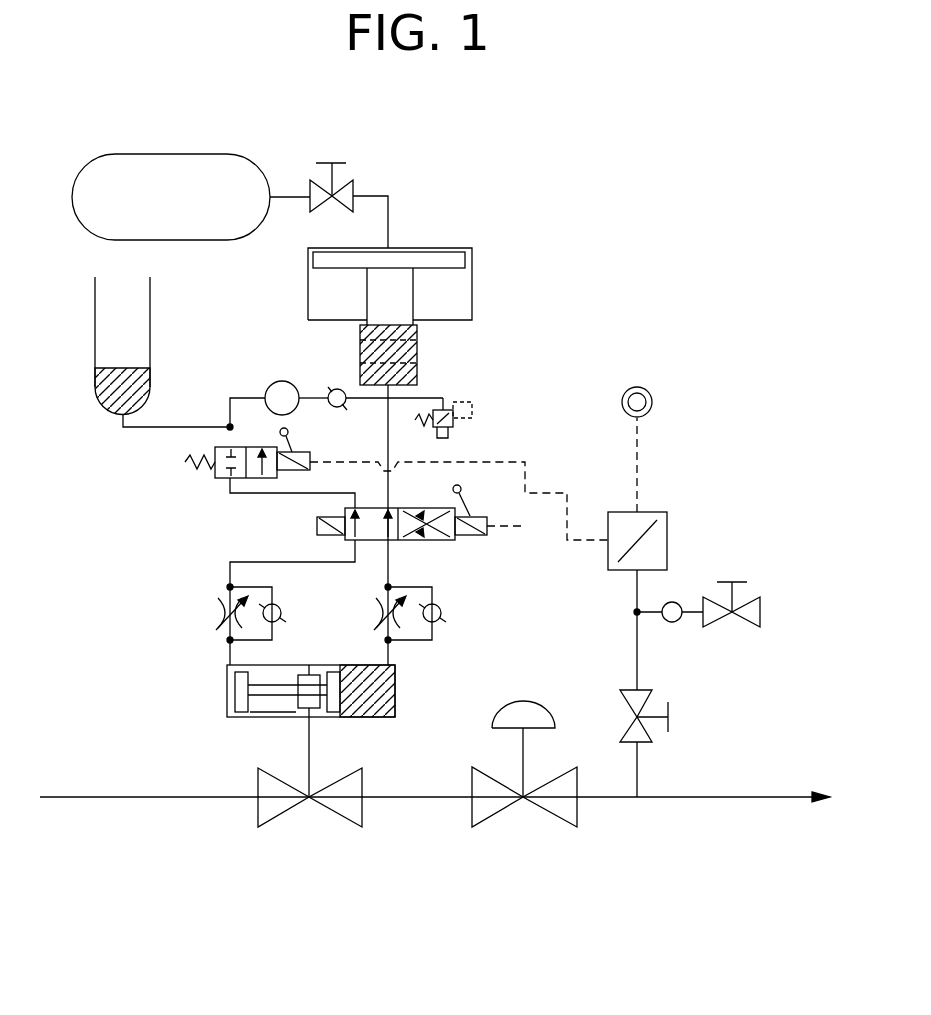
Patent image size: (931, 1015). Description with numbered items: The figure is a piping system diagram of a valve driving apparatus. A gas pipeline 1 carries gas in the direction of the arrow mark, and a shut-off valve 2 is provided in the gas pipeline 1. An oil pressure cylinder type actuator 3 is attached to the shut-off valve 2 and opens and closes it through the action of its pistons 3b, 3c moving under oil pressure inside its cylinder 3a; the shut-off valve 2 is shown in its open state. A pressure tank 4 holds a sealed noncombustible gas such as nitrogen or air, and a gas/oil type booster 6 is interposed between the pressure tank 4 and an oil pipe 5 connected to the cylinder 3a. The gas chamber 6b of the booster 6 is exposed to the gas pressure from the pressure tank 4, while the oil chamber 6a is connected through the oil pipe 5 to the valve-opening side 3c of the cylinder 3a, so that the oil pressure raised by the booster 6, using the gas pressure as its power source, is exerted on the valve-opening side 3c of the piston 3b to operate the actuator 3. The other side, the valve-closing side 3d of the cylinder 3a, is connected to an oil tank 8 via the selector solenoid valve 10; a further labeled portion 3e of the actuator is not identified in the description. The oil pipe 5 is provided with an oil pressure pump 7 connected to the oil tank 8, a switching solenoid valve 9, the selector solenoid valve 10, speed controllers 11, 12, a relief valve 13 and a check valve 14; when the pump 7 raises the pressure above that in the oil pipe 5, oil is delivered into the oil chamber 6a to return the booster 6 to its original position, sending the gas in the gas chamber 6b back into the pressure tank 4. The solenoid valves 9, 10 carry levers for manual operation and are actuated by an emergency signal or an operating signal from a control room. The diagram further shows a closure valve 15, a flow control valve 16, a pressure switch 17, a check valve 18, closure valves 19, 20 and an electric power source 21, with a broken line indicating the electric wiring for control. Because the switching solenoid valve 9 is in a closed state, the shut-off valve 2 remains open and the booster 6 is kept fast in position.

The gas pipeline 1 is at (611, 799).
The shut-off valve 2 is at (327, 806).
The oil pressure cylinder type actuator 3 is at (258, 724).
The cylinder 3a is at (277, 717).
The piston 3b is at (336, 715).
The valve-opening side 3c is at (397, 705).
The valve-closing side 3d is at (226, 702).
The cylinder chamber 3e is at (236, 717).
The pressure tank 4 is at (80, 228).
The oil pipe 5 is at (393, 484).
The gas/oil type booster 6 is at (463, 283).
The oil chamber 6a is at (413, 348).
The gas chamber 6b is at (437, 250).
The oil pressure pump 7 is at (263, 383).
The oil tank 8 is at (95, 347).
The switching solenoid valve 9 is at (218, 476).
The selector solenoid valve 10 is at (347, 535).
The speed controller 11 is at (215, 612).
The speed controller 12 is at (375, 603).
The relief valve 13 is at (455, 417).
The check valve 14 is at (333, 410).
The closure valve 15 is at (352, 180).
The flow control valve 16 is at (544, 812).
The pressure switch 17 is at (669, 520).
The check valve 18 is at (673, 602).
The closure valve 19 is at (650, 698).
The closure valve 20 is at (757, 628).
The electric power source 21 is at (650, 412).